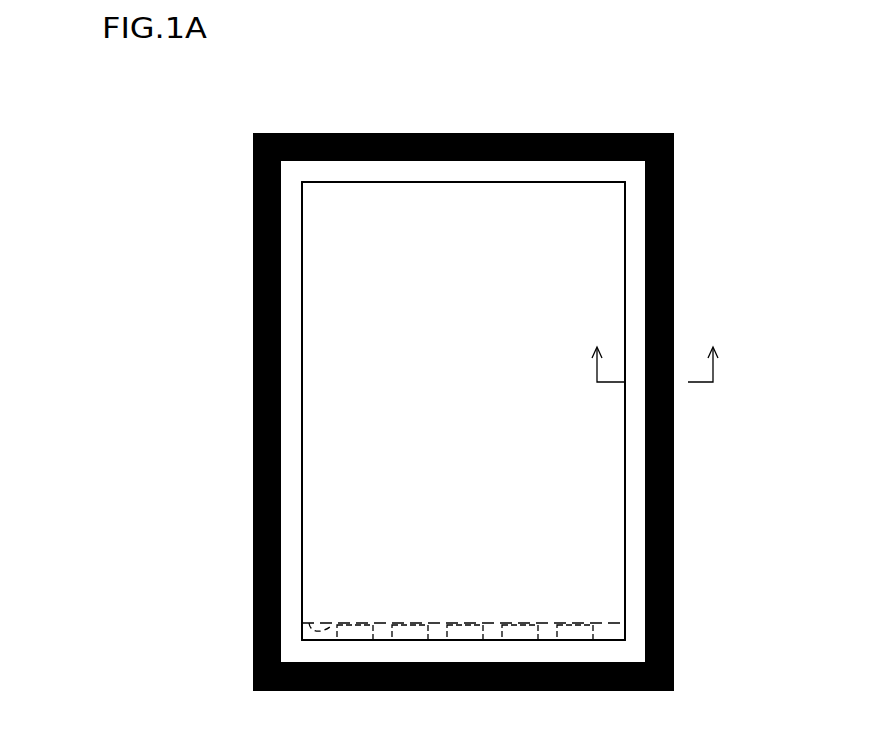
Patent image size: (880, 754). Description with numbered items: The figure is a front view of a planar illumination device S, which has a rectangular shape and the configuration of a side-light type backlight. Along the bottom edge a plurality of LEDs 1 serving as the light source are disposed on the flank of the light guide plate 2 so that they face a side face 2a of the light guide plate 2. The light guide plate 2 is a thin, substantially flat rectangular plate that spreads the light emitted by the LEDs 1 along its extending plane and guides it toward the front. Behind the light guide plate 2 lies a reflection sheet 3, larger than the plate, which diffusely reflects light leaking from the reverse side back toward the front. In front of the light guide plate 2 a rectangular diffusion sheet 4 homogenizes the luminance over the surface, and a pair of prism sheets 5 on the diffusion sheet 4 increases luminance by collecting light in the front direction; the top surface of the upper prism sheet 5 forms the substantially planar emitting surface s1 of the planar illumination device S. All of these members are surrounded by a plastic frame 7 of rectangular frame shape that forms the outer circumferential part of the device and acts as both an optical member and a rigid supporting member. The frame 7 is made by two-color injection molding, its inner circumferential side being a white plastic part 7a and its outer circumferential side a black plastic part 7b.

The planar illumination device S is at (634, 87).
The frame 7 is at (674, 213).
The white plastic part 7a is at (625, 236).
The black plastic part 7b is at (674, 262).
The emitting surface s1 is at (332, 257).
The prism sheet 5 is at (332, 335).
The diffusion sheet 4 is at (332, 423).
The reflection sheet 3 is at (332, 493).
The light guide plate 2 is at (383, 622).
The side face 2a is at (313, 621).
The LED 1 is at (525, 623).